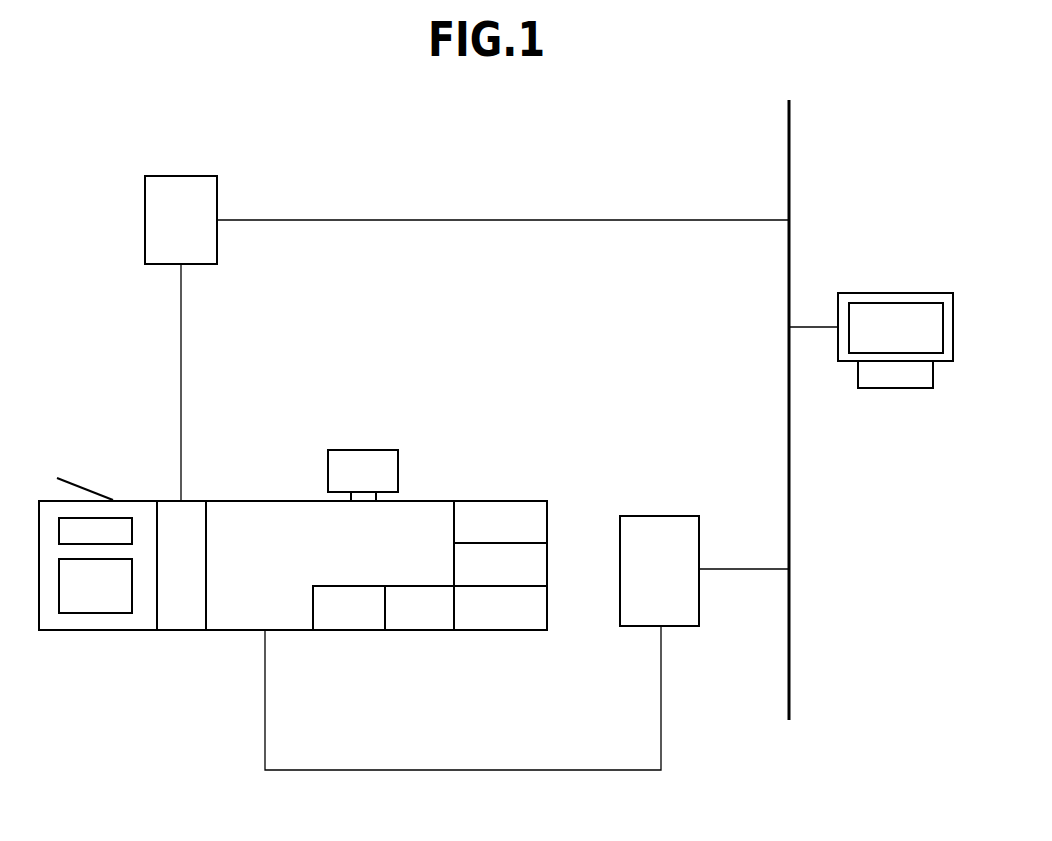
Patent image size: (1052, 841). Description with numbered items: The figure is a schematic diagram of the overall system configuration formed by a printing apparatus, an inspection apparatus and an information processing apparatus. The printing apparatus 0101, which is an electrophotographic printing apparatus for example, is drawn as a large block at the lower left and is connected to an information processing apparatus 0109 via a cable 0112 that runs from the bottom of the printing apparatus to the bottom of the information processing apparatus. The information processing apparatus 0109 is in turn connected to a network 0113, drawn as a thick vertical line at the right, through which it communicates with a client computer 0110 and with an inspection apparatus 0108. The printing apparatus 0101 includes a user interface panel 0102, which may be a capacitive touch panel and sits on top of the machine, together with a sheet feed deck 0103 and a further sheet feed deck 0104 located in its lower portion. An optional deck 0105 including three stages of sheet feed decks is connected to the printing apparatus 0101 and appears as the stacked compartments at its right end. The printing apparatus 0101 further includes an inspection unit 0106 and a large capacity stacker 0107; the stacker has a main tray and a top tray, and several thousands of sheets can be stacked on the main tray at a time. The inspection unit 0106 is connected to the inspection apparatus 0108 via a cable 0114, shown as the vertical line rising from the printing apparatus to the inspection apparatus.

The printing apparatus 0101 is at (245, 500).
The user interface (UI) panel 0102 is at (360, 450).
The sheet feed deck 0103 is at (346, 622).
The sheet feed deck 0104 is at (425, 622).
The optional deck 0105 is at (500, 500).
The inspection unit 0106 is at (183, 623).
The large capacity stacker 0107 is at (96, 623).
The inspection apparatus 0108 is at (180, 176).
The information processing apparatus 0109 is at (661, 516).
The client computer 0110 is at (900, 293).
The cable 0112 is at (550, 770).
The network 0113 is at (790, 685).
The cable 0114 is at (181, 345).